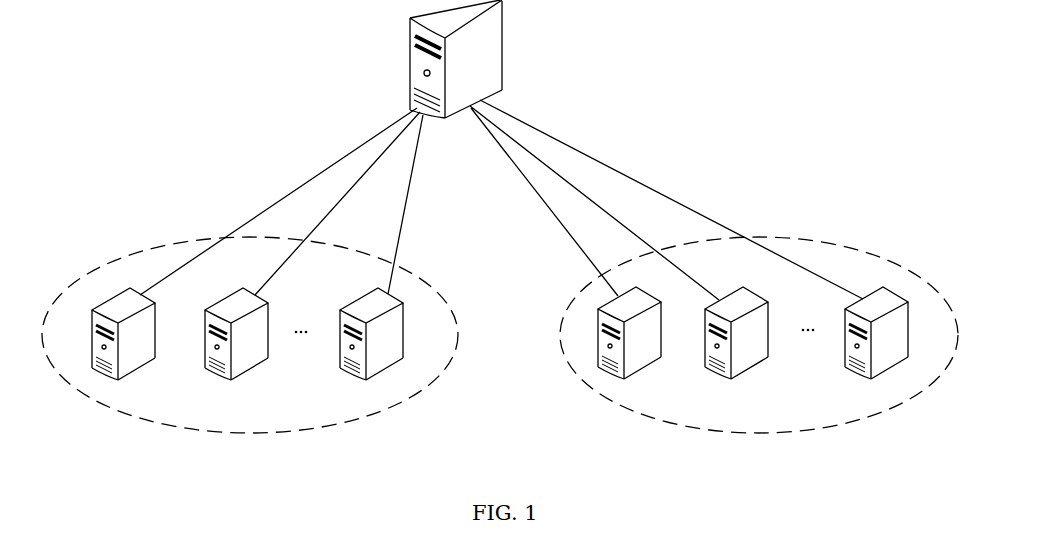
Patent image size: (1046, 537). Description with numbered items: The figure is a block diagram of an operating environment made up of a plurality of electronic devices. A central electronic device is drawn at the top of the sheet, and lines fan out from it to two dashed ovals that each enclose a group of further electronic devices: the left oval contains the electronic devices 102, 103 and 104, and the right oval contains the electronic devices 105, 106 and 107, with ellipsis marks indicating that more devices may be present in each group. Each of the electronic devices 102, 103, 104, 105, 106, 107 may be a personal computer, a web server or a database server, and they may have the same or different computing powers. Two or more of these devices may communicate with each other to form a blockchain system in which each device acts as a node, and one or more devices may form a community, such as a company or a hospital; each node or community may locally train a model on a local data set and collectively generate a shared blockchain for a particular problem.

The electronic device 102 is at (155, 314).
The electronic device 103 is at (268, 318).
The electronic device 104 is at (403, 328).
The electronic device 105 is at (661, 330).
The electronic device 106 is at (768, 325).
The electronic device 107 is at (908, 325).